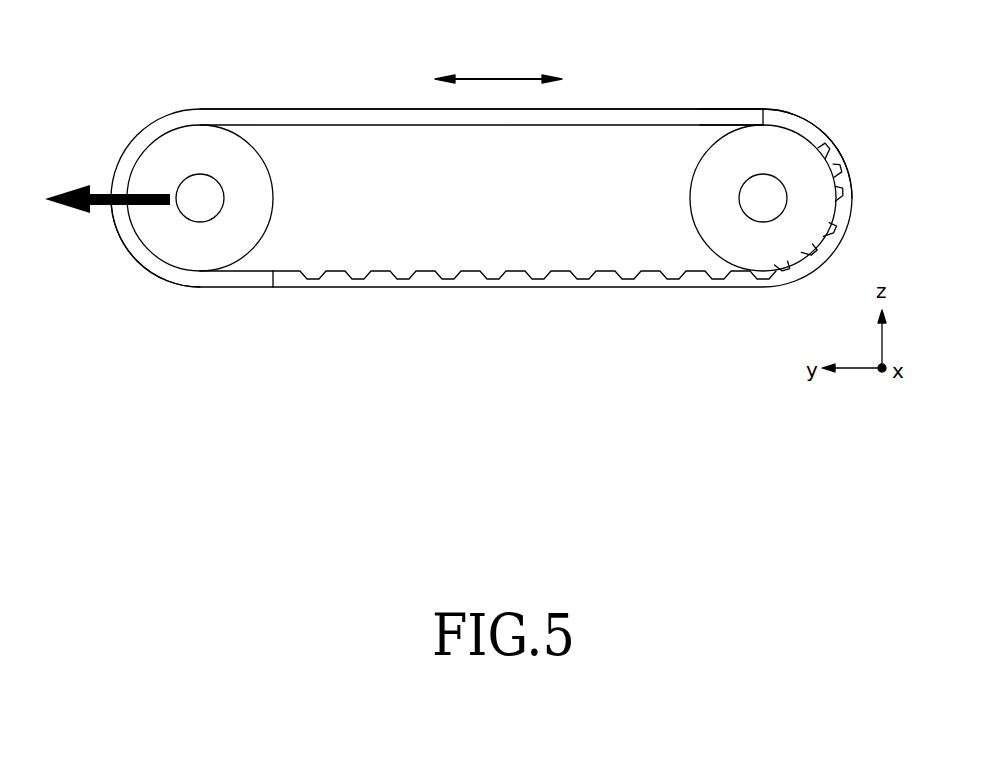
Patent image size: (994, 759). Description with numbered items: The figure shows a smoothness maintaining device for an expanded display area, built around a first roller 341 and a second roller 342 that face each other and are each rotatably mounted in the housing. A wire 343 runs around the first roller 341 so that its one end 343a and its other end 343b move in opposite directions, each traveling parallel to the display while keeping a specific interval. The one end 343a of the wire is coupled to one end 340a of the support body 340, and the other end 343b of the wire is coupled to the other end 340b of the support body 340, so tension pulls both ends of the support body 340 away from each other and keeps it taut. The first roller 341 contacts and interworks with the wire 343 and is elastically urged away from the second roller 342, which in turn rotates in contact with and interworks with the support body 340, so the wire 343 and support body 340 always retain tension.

The support body 340 is at (481, 219).
The one end of the support body 340a is at (292, 278).
The other end of the support body 340b is at (780, 117).
The first roller 341 is at (173, 247).
The second roller 342 is at (818, 198).
The wire 343 is at (481, 72).
The one end of the wire 343a is at (253, 280).
The other end of the wire 343b is at (721, 117).